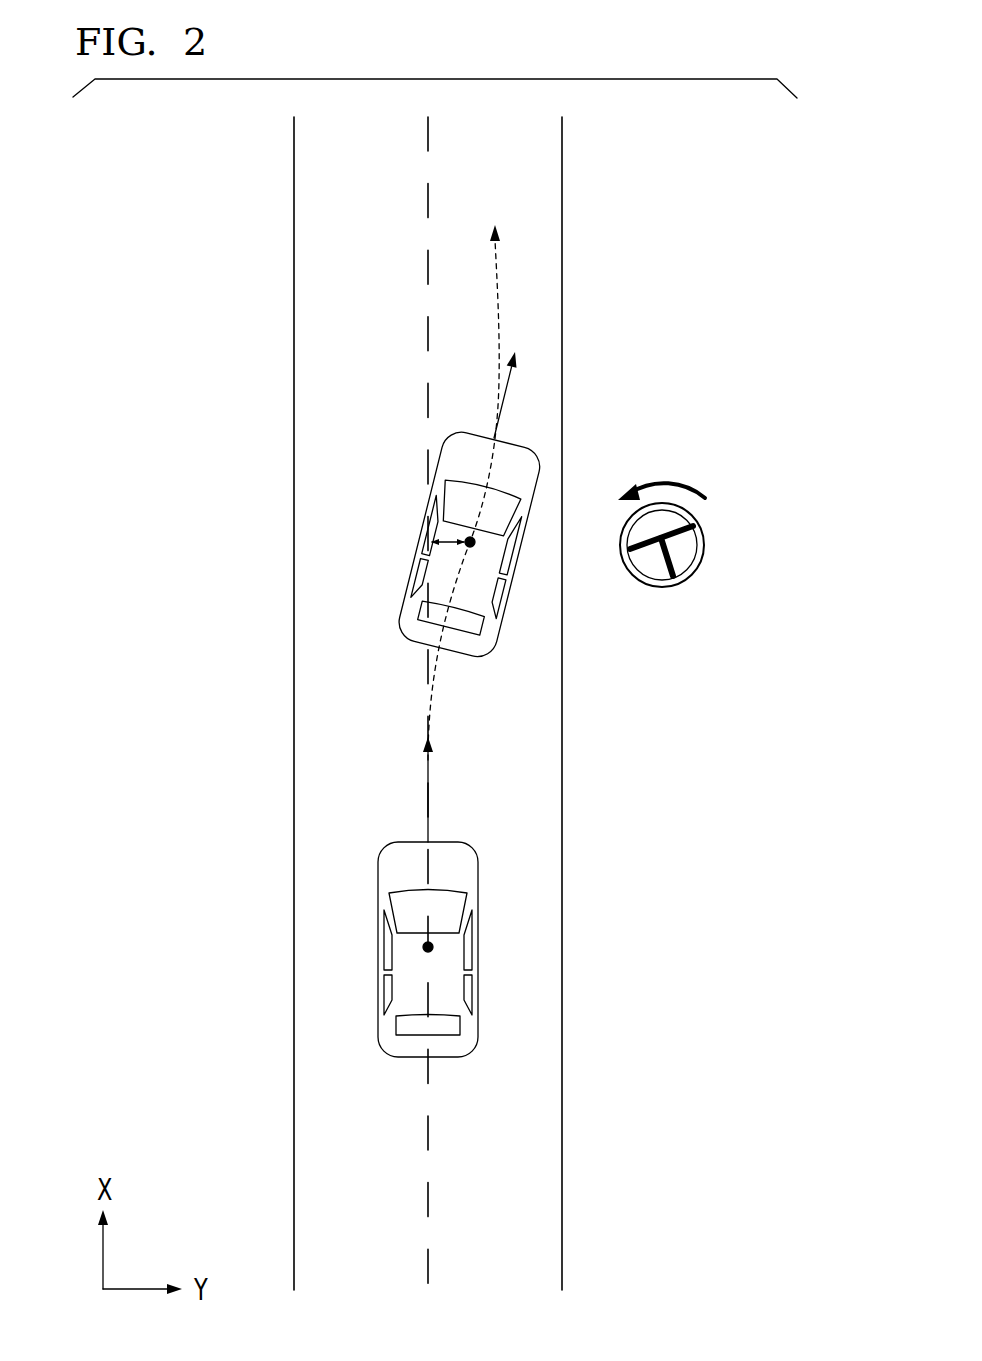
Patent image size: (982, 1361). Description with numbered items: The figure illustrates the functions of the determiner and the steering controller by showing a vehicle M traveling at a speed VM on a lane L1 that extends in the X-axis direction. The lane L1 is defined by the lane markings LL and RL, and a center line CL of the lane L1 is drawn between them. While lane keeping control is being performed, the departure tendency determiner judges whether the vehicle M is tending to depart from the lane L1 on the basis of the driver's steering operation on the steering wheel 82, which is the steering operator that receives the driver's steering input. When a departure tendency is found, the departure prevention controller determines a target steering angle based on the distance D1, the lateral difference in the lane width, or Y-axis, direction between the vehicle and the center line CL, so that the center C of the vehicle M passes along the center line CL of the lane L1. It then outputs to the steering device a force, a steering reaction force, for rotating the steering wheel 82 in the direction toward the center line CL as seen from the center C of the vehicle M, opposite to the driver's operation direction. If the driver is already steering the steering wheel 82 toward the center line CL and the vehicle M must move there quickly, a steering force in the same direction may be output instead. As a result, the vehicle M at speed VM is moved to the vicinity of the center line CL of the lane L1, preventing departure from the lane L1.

The steering wheel 82 is at (706, 545).
The vehicle M is at (378, 947).
The center of the vehicle C is at (433, 947).
The speed VM is at (427, 789).
The distance D1 is at (447, 545).
The center line CL is at (432, 137).
The lane marking LL is at (294, 1155).
The lane marking RL is at (563, 1155).
The lane L1 is at (442, 1290).